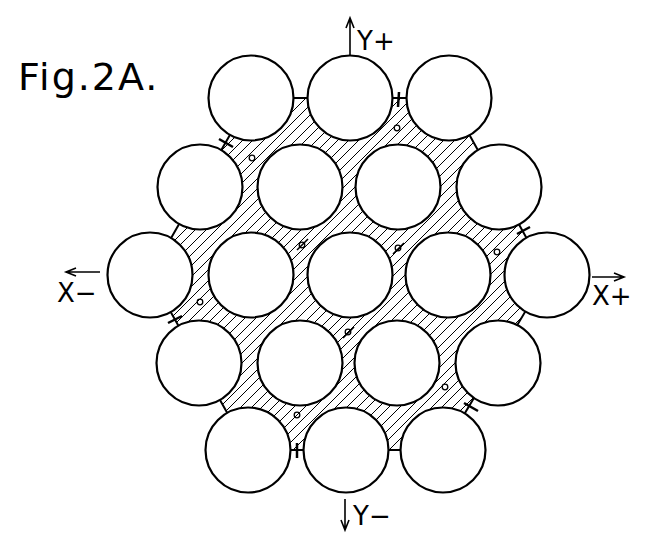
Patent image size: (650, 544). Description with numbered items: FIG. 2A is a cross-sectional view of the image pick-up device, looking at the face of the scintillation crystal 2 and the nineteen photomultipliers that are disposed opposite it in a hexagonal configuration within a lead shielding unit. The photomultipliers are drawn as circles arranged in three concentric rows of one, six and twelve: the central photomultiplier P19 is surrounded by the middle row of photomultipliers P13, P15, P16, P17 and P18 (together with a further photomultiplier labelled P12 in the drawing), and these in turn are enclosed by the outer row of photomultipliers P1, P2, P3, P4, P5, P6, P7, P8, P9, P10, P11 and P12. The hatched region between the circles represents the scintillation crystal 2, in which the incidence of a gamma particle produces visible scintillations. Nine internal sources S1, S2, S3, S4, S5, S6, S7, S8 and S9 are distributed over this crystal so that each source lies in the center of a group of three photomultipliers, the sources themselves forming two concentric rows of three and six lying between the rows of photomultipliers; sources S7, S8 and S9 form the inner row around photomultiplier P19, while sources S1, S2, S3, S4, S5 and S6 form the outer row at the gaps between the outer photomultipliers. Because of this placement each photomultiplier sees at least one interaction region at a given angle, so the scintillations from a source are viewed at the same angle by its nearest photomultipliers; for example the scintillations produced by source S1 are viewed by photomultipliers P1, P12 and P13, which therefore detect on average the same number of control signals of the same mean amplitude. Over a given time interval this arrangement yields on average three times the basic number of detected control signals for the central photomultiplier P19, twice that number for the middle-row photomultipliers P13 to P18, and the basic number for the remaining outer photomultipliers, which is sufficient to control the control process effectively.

The scintillation crystal 2 is at (468, 150).
The photomultiplier P1 is at (449, 98).
The photomultiplier P2 is at (499, 187).
The photomultiplier P3 is at (547, 275).
The photomultiplier P4 is at (498, 363).
The photomultiplier P5 is at (443, 450).
The photomultiplier P6 is at (346, 450).
The photomultiplier P7 is at (248, 450).
The photomultiplier P8 is at (199, 363).
The photomultiplier P9 is at (150, 275).
The photomultiplier P10 is at (200, 187).
The photomultiplier P11 is at (251, 98).
The photomultiplier P12 is at (399, 187).
The photomultiplier P13 is at (398, 187).
The photomultiplier P15 is at (397, 363).
The photomultiplier P16 is at (300, 363).
The photomultiplier P17 is at (251, 275).
The photomultiplier P18 is at (300, 187).
The photomultiplier P19 is at (350, 275).
The source S1 is at (400, 101).
The source S2 is at (525, 231).
The source S3 is at (474, 407).
The source S4 is at (297, 452).
The source S5 is at (174, 319).
The source S6 is at (225, 142).
The source S7 is at (401, 249).
The source S8 is at (351, 333).
The source S9 is at (305, 247).